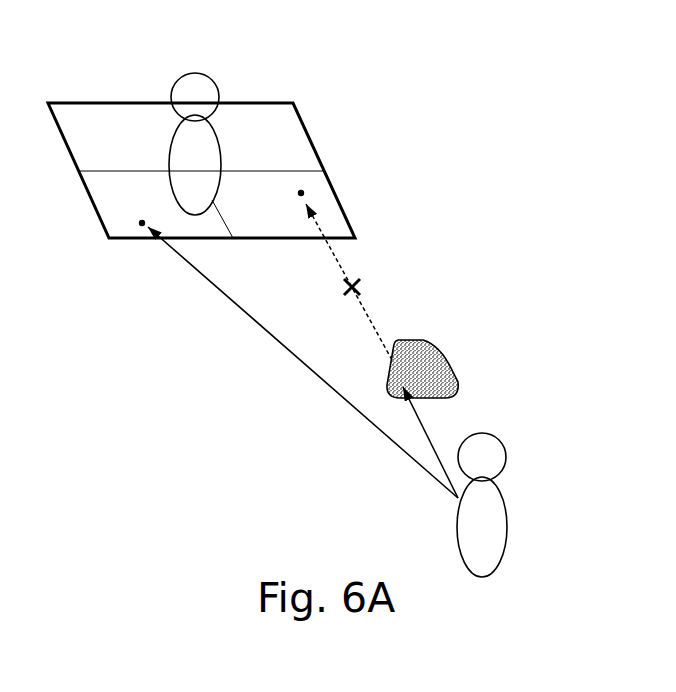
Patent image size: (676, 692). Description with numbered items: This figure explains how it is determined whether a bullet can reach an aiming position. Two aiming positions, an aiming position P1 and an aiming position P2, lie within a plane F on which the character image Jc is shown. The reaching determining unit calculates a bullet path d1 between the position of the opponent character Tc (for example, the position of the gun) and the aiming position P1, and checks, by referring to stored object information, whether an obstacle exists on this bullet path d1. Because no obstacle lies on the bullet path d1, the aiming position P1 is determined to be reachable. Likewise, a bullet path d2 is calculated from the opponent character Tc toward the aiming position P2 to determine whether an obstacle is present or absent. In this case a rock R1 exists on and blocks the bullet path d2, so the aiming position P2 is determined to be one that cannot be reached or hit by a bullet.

The frame / image plane F is at (260, 103).
The subject person image Jc is at (177, 90).
The aiming position P1 is at (142, 223).
The aiming position P2 is at (301, 193).
The bullet path d1 is at (273, 342).
The bullet path d2 is at (423, 422).
The rock R1 is at (450, 360).
The opponent character Tc is at (498, 458).